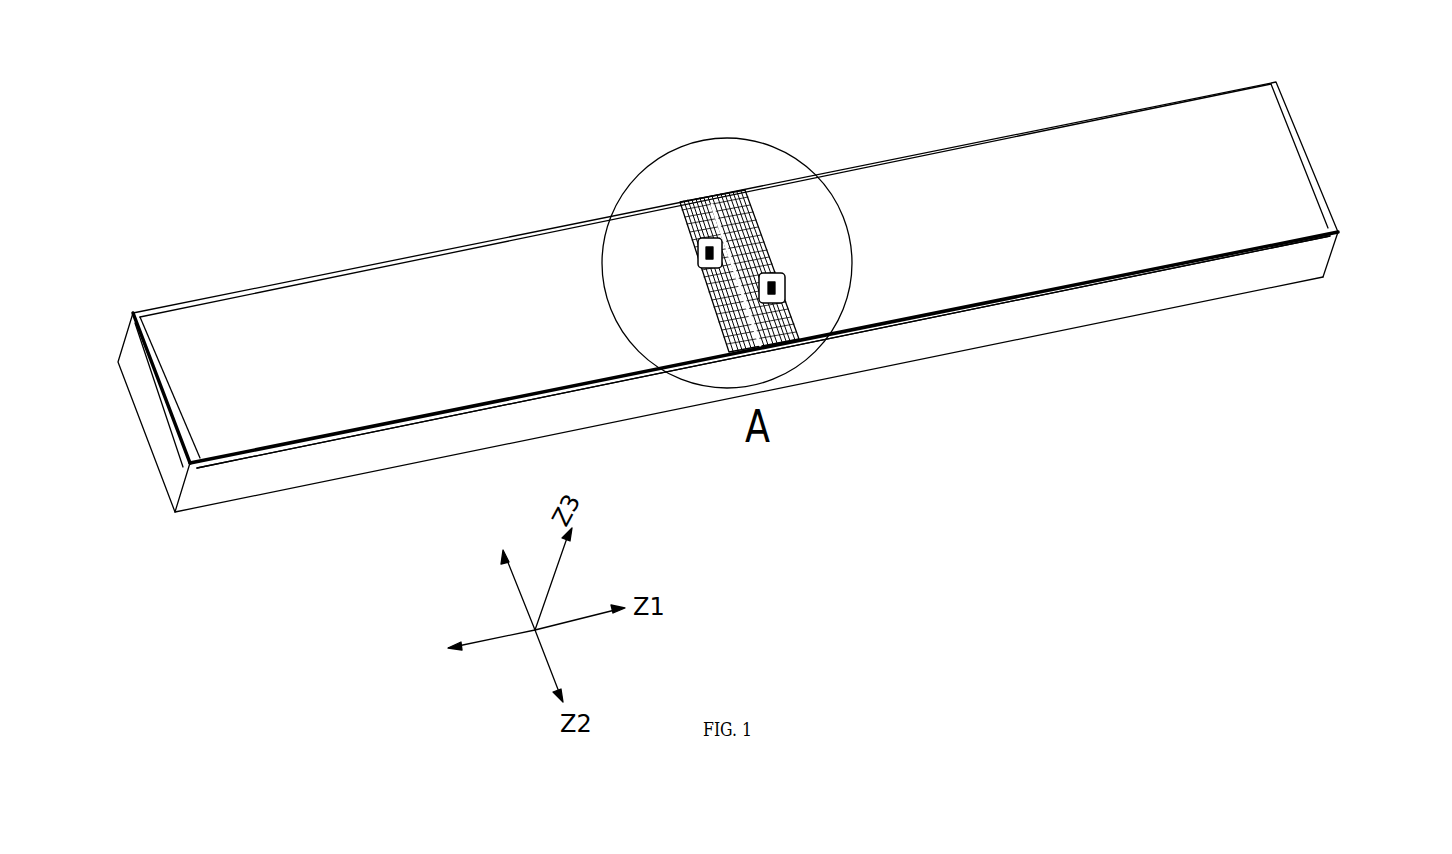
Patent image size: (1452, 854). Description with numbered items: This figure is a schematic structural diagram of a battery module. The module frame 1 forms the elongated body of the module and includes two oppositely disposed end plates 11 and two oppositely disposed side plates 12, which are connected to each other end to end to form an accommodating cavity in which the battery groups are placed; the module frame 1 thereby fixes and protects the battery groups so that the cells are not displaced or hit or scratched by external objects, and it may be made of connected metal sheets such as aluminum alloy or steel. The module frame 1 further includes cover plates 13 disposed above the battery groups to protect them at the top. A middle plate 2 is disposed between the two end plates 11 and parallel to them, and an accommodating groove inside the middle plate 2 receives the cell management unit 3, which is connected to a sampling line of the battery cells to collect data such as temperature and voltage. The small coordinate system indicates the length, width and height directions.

The module frame 1 is at (1390, 108).
The end plates 11 is at (153, 393).
The side plates 12 is at (1317, 257).
The cover plates 13 is at (356, 297).
The middle plate 2 is at (645, 207).
The cell management unit 3 is at (742, 198).